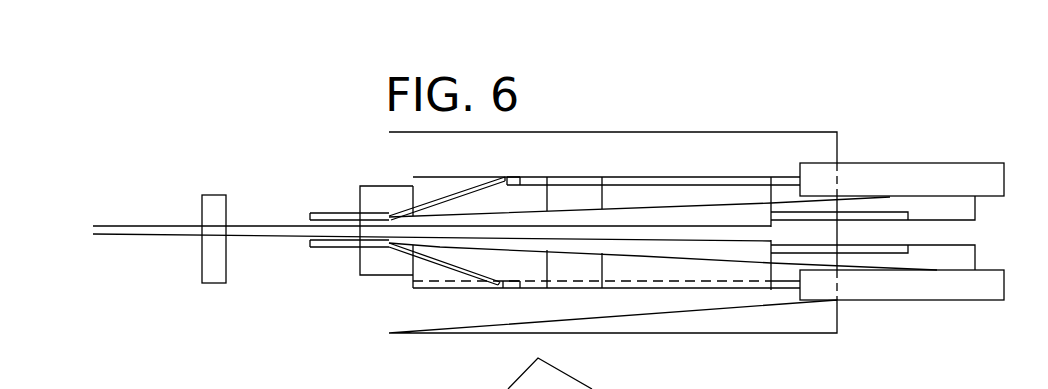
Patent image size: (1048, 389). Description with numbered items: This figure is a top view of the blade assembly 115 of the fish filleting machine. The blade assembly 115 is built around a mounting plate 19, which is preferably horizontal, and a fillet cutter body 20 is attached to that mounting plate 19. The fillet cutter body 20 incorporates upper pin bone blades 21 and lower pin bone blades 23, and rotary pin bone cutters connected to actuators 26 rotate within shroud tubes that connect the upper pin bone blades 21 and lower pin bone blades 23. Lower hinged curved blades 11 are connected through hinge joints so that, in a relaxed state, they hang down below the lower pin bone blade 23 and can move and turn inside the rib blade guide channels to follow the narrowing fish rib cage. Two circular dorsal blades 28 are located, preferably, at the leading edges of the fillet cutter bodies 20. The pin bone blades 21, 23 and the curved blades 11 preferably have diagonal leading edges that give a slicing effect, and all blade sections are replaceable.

The lower hinged curved blade 11 is at (943, 210).
The mounting plate 19 is at (837, 333).
The fillet cutter body 20 is at (172, 235).
The upper pin bone blade 21 is at (468, 276).
The lower pin bone blade 23 is at (447, 265).
The actuator 26 is at (993, 183).
The circular dorsal blade 28 is at (97, 236).
The blade assembly 115 is at (358, 290).